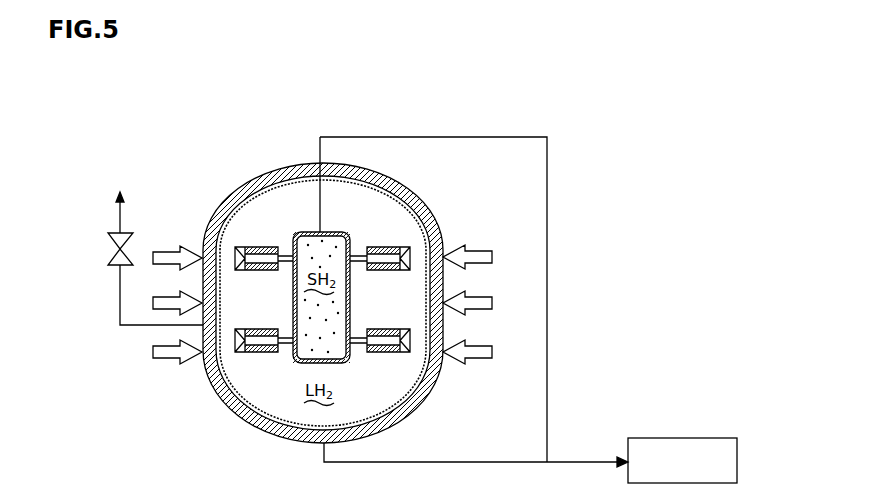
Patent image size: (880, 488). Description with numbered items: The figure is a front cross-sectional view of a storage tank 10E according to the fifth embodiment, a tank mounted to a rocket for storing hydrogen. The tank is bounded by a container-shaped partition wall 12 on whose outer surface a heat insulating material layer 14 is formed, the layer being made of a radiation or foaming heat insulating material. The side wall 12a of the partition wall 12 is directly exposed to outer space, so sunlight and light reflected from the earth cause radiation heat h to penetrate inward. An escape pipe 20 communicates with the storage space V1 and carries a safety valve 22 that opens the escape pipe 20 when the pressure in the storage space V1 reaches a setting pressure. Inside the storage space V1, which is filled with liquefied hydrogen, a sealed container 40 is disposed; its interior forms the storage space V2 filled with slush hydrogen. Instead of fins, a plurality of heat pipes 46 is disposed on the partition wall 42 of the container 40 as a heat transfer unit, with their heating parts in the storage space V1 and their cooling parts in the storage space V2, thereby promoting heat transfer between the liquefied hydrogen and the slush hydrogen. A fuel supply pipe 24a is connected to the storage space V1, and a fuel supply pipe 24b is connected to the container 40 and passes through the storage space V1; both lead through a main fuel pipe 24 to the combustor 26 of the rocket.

The storage tank 10E is at (386, 114).
The partition wall 12 is at (395, 190).
The side wall of the partition wall 12a is at (203, 284).
The heat insulating material layer 14 is at (303, 165).
The escape pipe 20 is at (120, 295).
The safety valve 22 is at (118, 233).
The main fuel pipe 24 is at (570, 462).
The fuel supply pipe 24a is at (472, 462).
The fuel supply pipe 24b is at (472, 137).
The combustor 26 is at (676, 438).
The container 40 is at (293, 232).
The partition wall of the container 42 is at (350, 358).
The heat pipes 46 is at (381, 246).
The radiation heat h is at (470, 318).
The storage space V1 is at (283, 398).
The storage space V2 is at (300, 354).